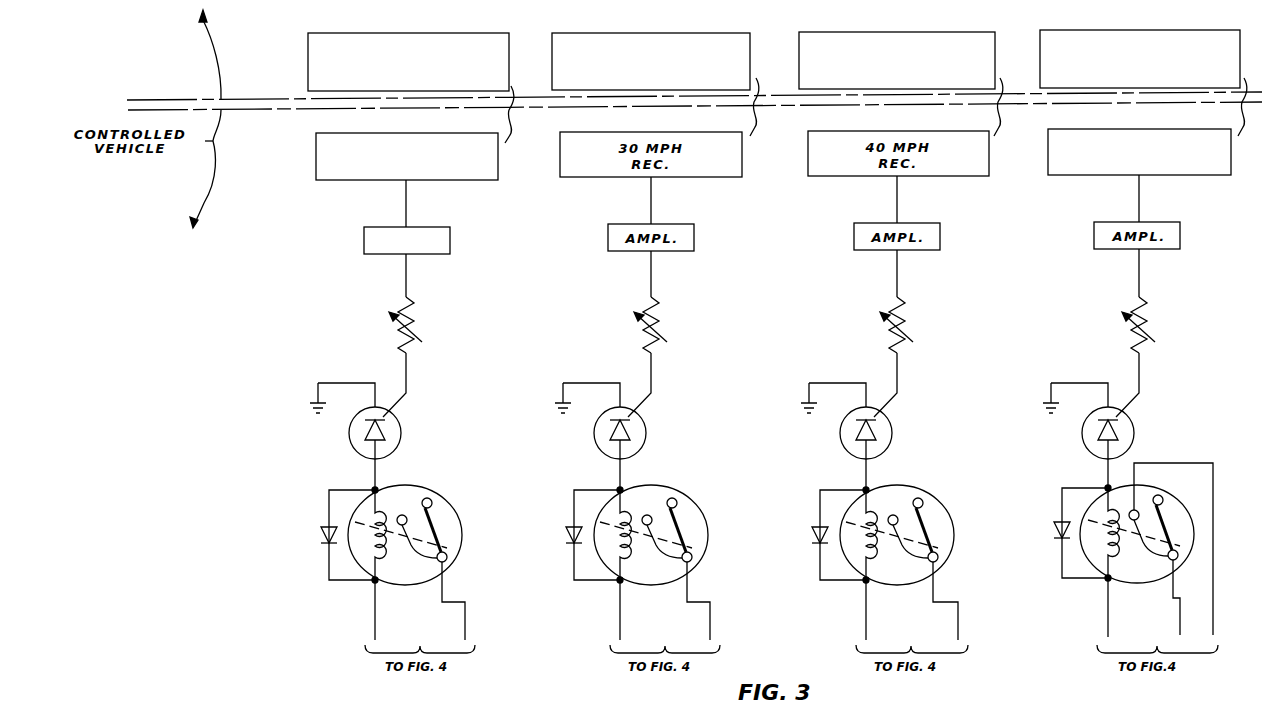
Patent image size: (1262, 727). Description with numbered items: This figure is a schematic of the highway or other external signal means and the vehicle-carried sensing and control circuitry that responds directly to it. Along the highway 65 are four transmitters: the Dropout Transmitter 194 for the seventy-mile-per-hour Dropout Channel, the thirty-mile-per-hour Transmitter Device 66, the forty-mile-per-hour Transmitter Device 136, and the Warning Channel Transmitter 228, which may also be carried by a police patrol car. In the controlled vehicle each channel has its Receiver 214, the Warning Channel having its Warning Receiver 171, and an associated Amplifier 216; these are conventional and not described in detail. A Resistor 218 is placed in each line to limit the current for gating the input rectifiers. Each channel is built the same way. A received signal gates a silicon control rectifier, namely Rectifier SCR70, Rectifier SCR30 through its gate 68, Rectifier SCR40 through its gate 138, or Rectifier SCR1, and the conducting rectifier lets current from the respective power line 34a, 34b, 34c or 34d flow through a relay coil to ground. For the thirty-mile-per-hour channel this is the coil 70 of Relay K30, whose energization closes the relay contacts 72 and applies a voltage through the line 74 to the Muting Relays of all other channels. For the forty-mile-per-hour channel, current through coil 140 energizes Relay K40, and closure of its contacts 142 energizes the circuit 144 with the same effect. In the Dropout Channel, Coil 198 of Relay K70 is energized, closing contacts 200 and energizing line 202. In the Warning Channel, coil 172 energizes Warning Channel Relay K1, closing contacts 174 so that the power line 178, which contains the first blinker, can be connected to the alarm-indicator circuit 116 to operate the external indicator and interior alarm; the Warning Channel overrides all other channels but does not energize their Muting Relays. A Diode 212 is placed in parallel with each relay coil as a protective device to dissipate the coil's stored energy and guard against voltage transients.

The highway 65 is at (101, 101).
The Dropout Transmitter 194 is at (420, 40).
The 30 MPH Transmitter Device 66 is at (684, 40).
The 40 MPH Transmitter Device 136 is at (930, 39).
The Transmitter 228 is at (1158, 38).
The Receiver 214 is at (462, 172).
The Warning Receiver 171 is at (1184, 174).
The Amplifier 216 is at (433, 254).
The Resistor 218 is at (409, 320).
The gate 68 is at (626, 418).
The gate 138 is at (872, 418).
The Silicon Control Rectifier SCR-70 SCR70 is at (393, 452).
The Silicon Control Rectifier SCR-30 SCR30 is at (638, 452).
The Silicon Control Rectifier SCR-40 SCR40 is at (884, 452).
The Silicon Control Rectifier SCR-1 SCR1 is at (1126, 452).
The Relay K-70 K70 is at (412, 507).
The Relay K-30 K30 is at (657, 507).
The Relay K40 is at (903, 507).
The Warning Channel Relay K1 is at (1132, 505).
The Diode 212 is at (320, 538).
The Coil 198 is at (380, 563).
The relay contacts 200 is at (401, 530).
The line 202 is at (465, 630).
The coil 70 is at (625, 563).
The relay contacts 72 is at (646, 530).
The line 74 is at (710, 630).
The coil 140 is at (871, 563).
The contacts 142 is at (892, 530).
The circuit 144 is at (958, 630).
The coil 172 is at (1113, 561).
The relay-controlled contacts 174 is at (1134, 527).
The line 178 is at (1180, 630).
The alarm-indicator circuit 116 is at (1208, 628).
The line 34a is at (375, 630).
The line 34b is at (620, 630).
The line 34c is at (866, 630).
The line 34d is at (1108, 630).